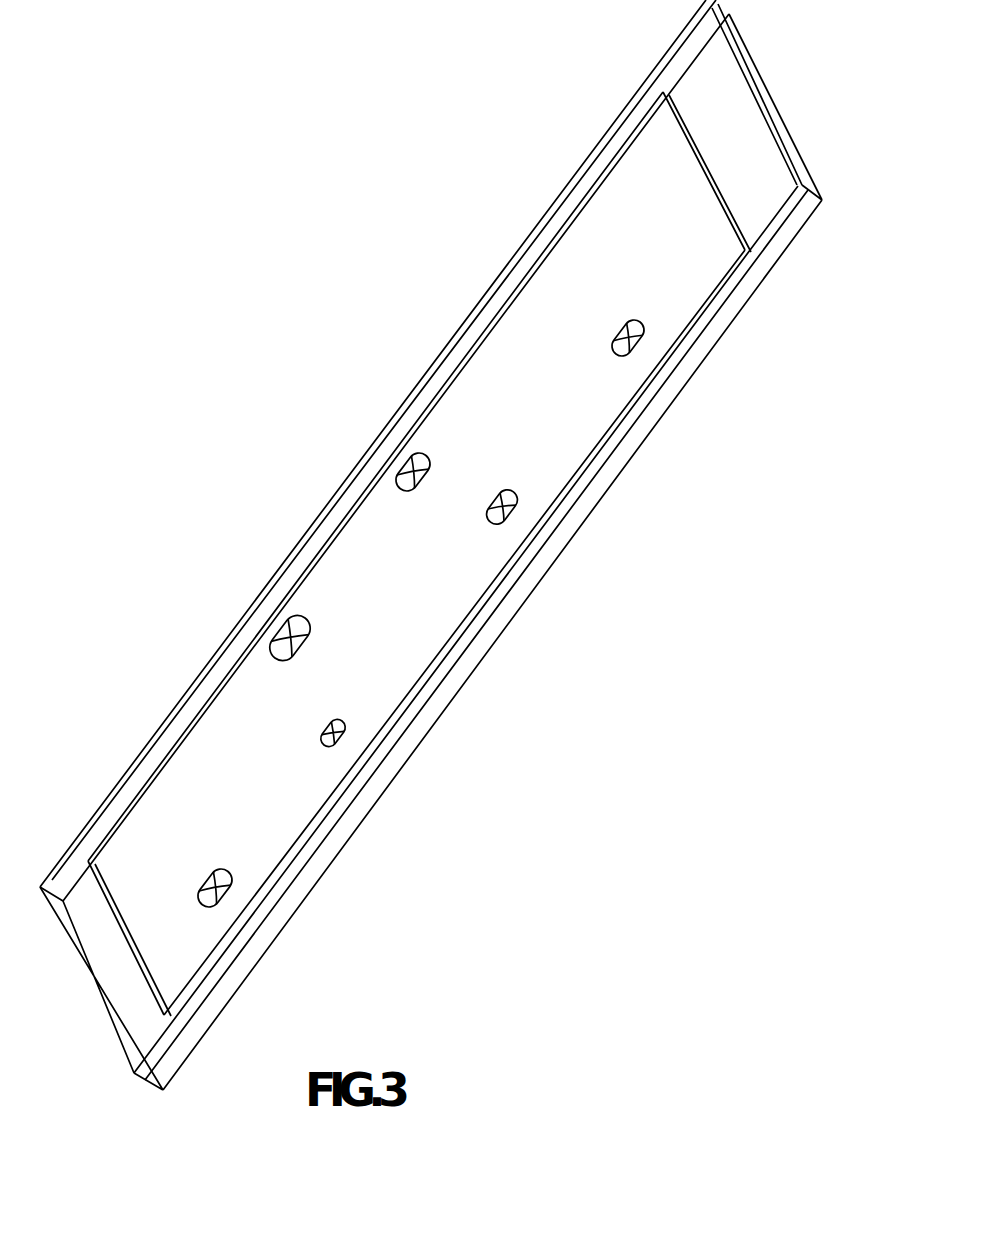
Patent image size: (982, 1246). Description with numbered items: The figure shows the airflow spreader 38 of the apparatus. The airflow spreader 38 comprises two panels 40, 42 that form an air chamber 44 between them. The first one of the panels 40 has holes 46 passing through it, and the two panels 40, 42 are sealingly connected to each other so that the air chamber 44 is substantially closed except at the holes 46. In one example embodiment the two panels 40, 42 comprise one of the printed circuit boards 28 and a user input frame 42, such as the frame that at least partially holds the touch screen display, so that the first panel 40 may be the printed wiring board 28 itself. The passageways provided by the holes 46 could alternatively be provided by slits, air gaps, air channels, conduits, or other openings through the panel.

The printed wiring board 28 is at (423, 623).
The airflow spreader 38 is at (148, 772).
The first panel 40 is at (148, 1018).
The second panel 42 is at (362, 808).
The air chamber 44 is at (598, 428).
The holes 46 is at (410, 468).